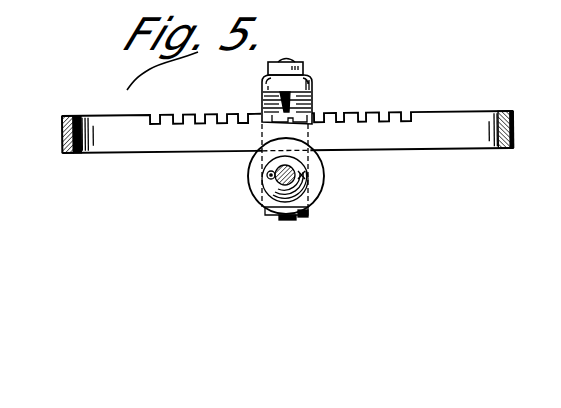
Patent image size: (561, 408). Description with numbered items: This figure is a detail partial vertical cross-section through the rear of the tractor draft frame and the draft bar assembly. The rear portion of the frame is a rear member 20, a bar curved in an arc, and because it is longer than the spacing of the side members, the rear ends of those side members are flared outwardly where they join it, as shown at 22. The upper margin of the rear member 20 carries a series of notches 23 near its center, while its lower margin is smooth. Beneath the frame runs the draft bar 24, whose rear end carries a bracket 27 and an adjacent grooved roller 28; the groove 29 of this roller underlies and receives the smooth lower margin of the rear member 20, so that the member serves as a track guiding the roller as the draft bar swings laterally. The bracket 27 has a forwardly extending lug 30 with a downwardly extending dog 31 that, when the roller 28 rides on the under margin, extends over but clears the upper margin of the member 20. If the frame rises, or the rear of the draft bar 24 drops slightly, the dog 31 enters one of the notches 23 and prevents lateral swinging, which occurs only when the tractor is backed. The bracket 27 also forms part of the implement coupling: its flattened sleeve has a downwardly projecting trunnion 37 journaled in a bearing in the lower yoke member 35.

The rear member 20 is at (180, 147).
The flared rear end portions of the side members 22 is at (62, 141).
The notches 23 is at (201, 114).
The draft bar 24 is at (278, 183).
The bracket 27 is at (313, 107).
The grooved roller 28 is at (313, 199).
The groove 29 is at (312, 180).
The lug 30 is at (311, 92).
The dog 31 is at (262, 90).
The lower yoke member 35 is at (266, 217).
The trunnion 37 is at (296, 220).